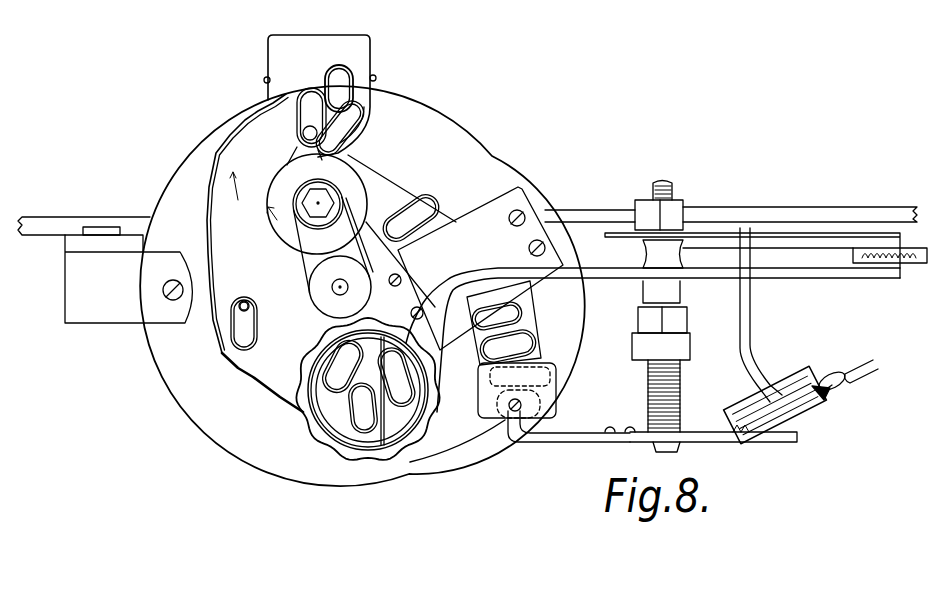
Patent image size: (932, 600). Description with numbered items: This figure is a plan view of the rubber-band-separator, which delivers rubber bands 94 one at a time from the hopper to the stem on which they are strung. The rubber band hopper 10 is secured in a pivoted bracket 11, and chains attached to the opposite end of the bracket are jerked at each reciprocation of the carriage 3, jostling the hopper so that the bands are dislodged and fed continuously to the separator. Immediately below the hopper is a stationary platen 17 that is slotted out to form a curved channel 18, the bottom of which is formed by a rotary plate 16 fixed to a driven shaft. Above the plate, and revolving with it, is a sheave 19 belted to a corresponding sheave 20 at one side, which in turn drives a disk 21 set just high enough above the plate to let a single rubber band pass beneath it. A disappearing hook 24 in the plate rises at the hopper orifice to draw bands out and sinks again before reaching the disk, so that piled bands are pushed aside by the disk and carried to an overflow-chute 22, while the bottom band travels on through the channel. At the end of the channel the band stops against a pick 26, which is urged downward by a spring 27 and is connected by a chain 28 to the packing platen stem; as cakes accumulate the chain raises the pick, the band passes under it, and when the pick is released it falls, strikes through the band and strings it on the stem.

The carriage 3 is at (50, 224).
The rubber band hopper 10 is at (367, 389).
The pivoted bracket 11 is at (602, 279).
The rotary plate 16 is at (356, 278).
The stationary platen 17 is at (362, 286).
The channel 18 is at (543, 321).
The sheave 19 is at (334, 257).
The sheave 20 is at (316, 228).
The disk 21 is at (361, 230).
The overflow-chute 22 is at (320, 100).
The disappearing hook 24 is at (252, 300).
The pick 26 is at (526, 444).
The spring 27 is at (682, 398).
The chain 28 is at (862, 373).
The rubber band 94 is at (377, 239).